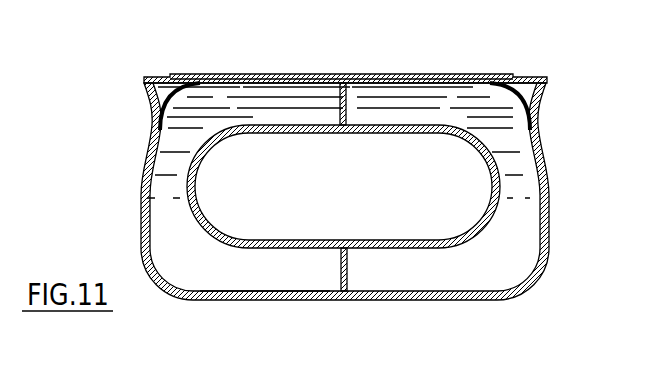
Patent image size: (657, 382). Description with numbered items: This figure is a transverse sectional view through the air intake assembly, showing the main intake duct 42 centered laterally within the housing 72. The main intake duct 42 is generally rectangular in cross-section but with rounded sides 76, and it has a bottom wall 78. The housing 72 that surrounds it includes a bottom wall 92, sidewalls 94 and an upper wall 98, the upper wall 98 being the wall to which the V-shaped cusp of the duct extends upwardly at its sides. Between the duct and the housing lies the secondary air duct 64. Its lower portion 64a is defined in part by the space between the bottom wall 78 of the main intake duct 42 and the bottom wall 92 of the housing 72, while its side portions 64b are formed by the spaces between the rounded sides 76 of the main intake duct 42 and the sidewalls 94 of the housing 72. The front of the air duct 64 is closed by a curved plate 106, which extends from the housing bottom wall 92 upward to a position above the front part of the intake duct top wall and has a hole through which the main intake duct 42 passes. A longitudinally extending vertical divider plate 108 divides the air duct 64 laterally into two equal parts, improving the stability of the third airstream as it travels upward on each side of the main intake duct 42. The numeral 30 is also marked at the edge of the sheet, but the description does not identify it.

The housing 30 is at (146, 4).
The main intake duct 42 is at (341, 185).
The air duct 64 is at (284, 270).
The lower portion of the air duct 64a is at (168, 197).
The side portions of the air duct 64b is at (520, 197).
The housing 72 is at (547, 185).
The rounded sides 76 is at (196, 186).
The bottom wall of the main intake duct 78 is at (380, 213).
The bottom wall of the housing 92 is at (444, 300).
The sidewalls of the housing 94 is at (356, 0).
The upper wall of the housing 98 is at (527, 76).
The curved plate 106 is at (233, 100).
The vertical divider plate 108 is at (340, 98).